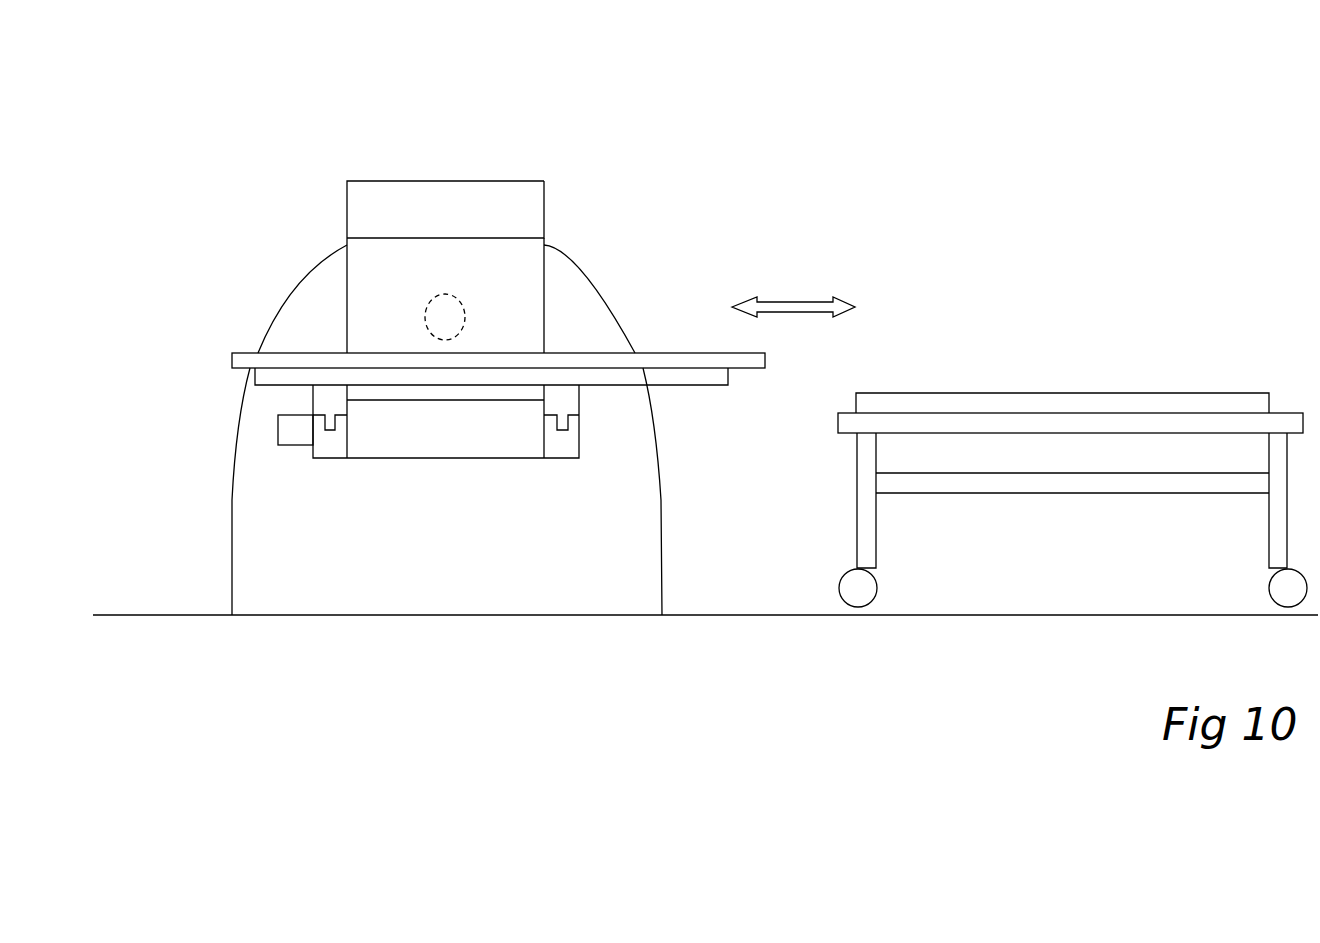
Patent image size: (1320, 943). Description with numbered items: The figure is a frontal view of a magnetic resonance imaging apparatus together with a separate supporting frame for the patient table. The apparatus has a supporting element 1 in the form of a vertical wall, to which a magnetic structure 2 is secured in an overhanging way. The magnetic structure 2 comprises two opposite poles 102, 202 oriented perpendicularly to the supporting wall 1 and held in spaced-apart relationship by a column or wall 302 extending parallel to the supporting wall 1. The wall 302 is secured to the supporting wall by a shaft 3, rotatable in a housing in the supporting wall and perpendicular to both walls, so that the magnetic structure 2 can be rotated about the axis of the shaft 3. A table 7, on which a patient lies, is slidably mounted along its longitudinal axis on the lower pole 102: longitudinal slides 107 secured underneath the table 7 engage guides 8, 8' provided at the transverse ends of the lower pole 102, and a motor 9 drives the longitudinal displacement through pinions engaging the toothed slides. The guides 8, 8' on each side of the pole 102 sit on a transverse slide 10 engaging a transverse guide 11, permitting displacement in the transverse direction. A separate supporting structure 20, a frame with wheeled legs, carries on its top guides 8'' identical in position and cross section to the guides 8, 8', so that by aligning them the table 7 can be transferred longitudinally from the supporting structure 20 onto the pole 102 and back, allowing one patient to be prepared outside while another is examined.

The supporting element 1 is at (585, 271).
The magnetic structure 2 is at (503, 177).
The pole 202 is at (544, 207).
The column or wall 302 is at (532, 312).
The shaft 3 is at (461, 311).
The table 7 is at (668, 356).
The guide 8 is at (477, 387).
The guide 8' is at (247, 399).
The guides 8'' is at (1062, 377).
The motor 9 is at (287, 430).
The transverse slide 10 is at (330, 422).
The transverse guide 11 is at (341, 455).
The pole 102 is at (503, 445).
The longitudinal slides 107 is at (688, 378).
The separate supporting structure 20 is at (852, 483).